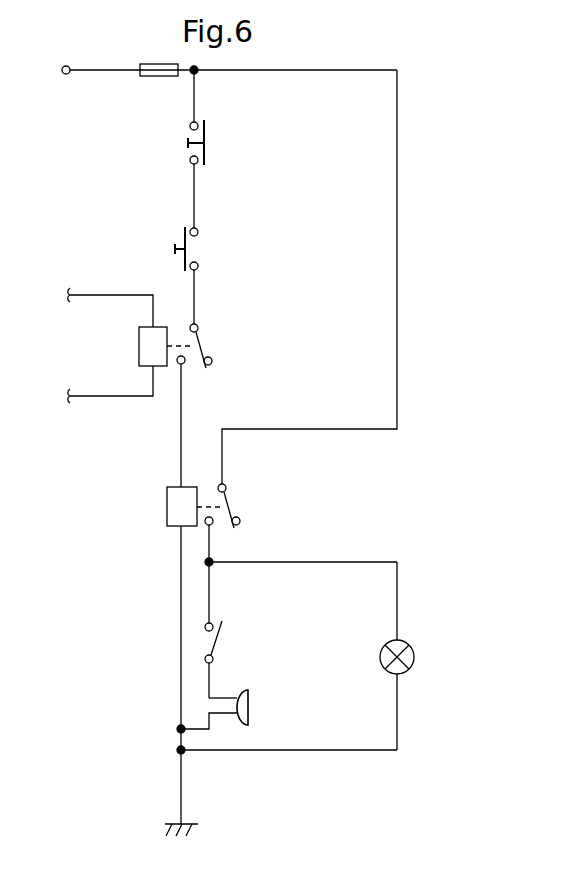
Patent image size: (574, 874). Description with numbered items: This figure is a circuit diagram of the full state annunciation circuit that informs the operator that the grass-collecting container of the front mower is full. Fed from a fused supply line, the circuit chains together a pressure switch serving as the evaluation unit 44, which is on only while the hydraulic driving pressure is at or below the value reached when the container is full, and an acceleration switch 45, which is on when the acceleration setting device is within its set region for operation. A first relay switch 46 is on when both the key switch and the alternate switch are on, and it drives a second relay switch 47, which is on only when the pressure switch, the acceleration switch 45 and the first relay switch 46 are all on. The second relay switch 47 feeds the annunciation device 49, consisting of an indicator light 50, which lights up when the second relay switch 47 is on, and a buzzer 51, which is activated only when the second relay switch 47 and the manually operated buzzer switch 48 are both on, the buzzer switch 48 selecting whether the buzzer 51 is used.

The evaluation unit 44 is at (205, 133).
The acceleration switch 45 is at (184, 233).
The first relay switch 46 is at (140, 347).
The second relay switch 47 is at (165, 508).
The buzzer switch 48 is at (220, 640).
The annunciation device 49 is at (360, 687).
The indicator light 50 is at (415, 652).
The buzzer 51 is at (256, 707).